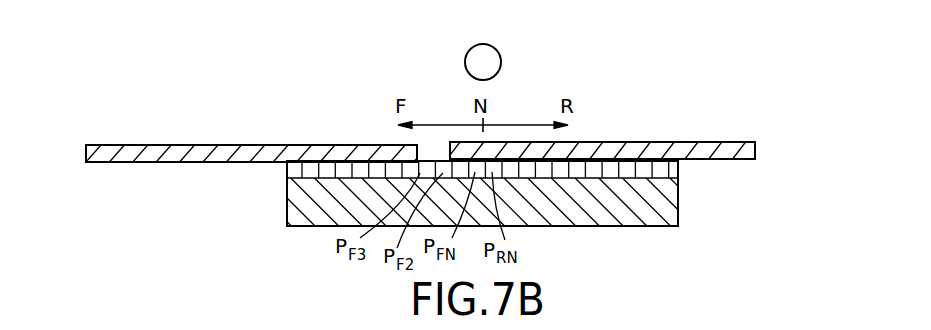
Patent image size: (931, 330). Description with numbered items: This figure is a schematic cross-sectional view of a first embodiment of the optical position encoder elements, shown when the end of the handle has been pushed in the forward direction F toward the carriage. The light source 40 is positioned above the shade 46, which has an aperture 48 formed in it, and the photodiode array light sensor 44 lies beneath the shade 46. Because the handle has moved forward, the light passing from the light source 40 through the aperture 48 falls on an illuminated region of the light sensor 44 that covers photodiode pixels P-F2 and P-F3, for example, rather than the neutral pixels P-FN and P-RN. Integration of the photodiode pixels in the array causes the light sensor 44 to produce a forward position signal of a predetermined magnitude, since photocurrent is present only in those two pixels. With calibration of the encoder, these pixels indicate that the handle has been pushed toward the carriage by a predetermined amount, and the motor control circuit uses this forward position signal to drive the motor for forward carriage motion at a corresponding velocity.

The light source 40 is at (490, 57).
The photodiode array light sensor 44 is at (662, 222).
The shade 46 is at (743, 142).
The aperture 48 is at (433, 150).